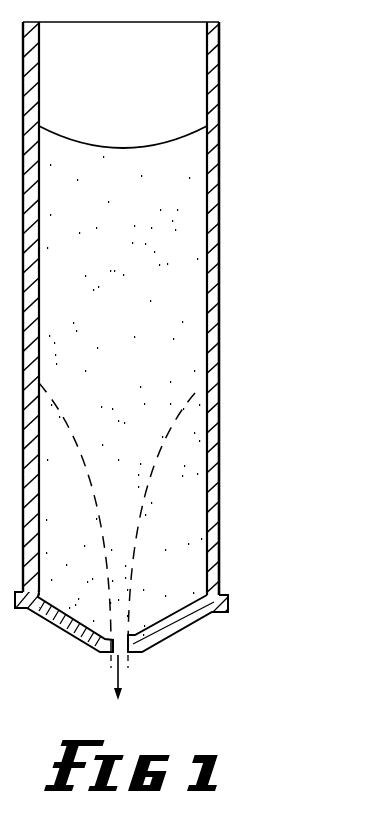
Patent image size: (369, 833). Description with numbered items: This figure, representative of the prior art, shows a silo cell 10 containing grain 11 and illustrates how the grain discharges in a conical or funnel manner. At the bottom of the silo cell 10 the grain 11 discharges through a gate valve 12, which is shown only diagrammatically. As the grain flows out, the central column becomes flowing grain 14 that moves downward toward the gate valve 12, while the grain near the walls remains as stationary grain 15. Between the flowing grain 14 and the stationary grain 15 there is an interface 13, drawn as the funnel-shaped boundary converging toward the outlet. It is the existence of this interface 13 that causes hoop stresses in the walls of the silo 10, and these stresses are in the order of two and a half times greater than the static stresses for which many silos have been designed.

The silo cell 10 is at (219, 165).
The grain 11 is at (188, 255).
The gate valve 12 is at (105, 655).
The interface 13 is at (189, 393).
The flowing grain 14 is at (125, 309).
The stationary grain 15 is at (190, 518).